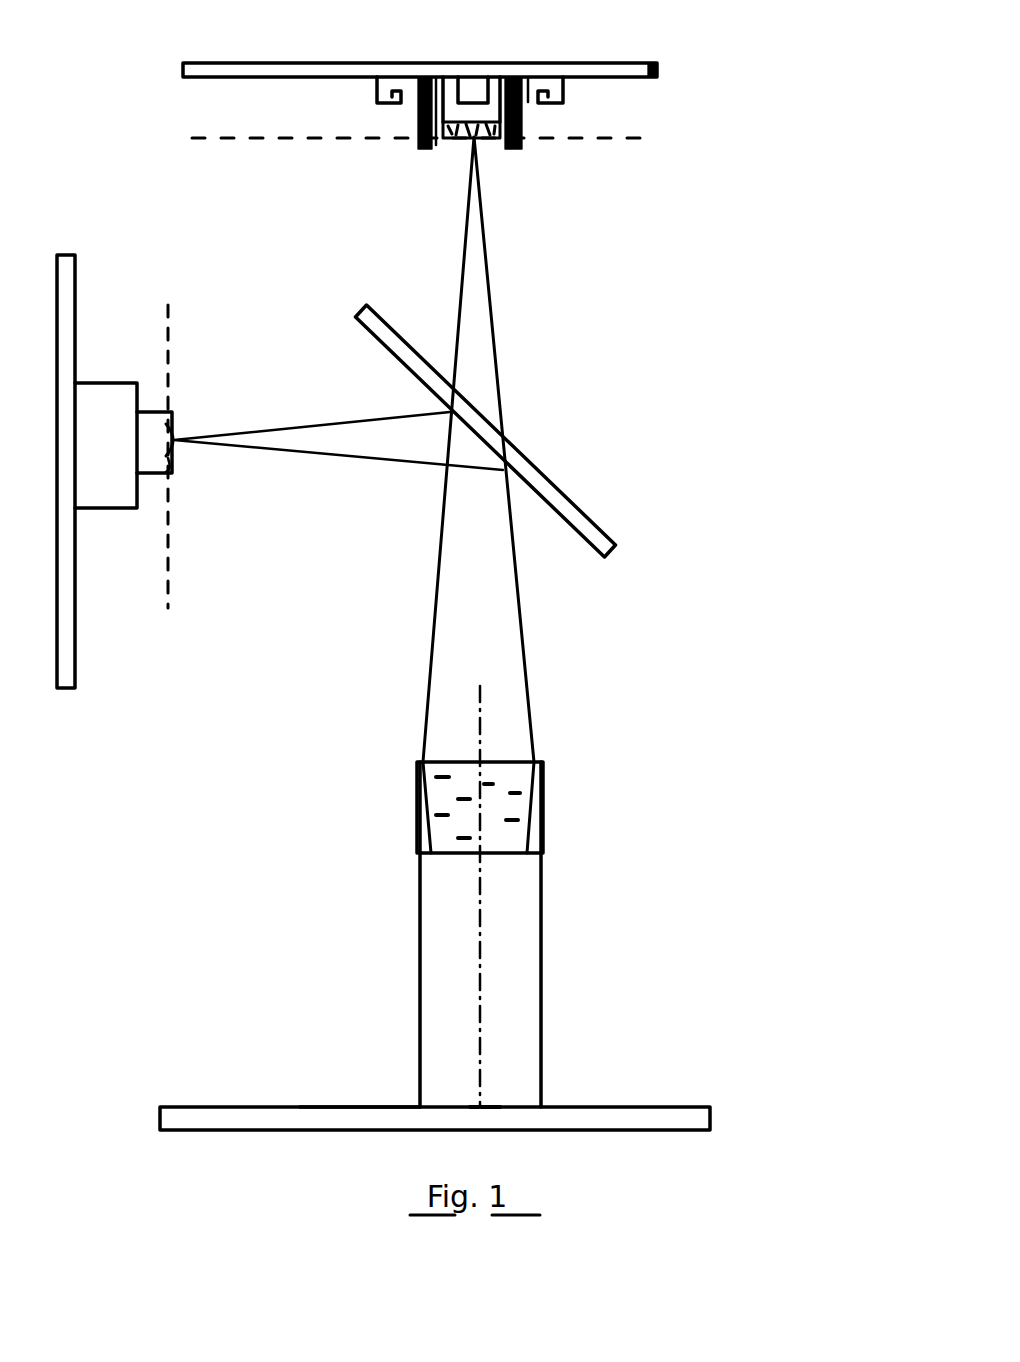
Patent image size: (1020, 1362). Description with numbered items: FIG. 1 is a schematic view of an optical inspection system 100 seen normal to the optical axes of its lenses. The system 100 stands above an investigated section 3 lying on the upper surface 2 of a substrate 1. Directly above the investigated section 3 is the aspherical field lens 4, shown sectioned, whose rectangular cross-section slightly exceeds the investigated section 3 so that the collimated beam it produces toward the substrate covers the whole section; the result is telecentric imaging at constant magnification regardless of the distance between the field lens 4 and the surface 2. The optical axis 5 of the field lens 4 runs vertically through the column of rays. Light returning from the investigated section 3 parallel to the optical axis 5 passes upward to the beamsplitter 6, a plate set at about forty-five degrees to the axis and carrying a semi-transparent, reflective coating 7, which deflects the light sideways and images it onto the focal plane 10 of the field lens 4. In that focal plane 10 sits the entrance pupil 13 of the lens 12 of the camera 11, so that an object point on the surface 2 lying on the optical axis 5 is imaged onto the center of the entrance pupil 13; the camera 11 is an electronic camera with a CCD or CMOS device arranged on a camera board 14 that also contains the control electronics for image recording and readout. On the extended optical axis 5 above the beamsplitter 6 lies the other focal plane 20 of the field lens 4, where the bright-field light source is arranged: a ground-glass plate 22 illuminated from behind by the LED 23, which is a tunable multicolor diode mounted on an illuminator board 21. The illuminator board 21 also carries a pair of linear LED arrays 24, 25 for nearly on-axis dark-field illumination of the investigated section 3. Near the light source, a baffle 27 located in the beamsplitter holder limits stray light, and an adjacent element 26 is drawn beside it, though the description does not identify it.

The optical inspection system 100 is at (777, 250).
The substrate 1 is at (647, 1112).
The upper surface 2 is at (290, 1094).
The investigated section 3 is at (497, 1104).
The aspherical field lens 4 is at (528, 832).
The optical axis 5 is at (483, 966).
The beamsplitter 6 is at (551, 491).
The semi-transparent reflective coating 7 is at (581, 548).
The focal plane 10 is at (171, 310).
The camera 11 is at (114, 492).
The camera lens 12 is at (170, 483).
The entrance pupil 13 is at (173, 440).
The camera board 14 is at (72, 673).
The focal plane 20 is at (256, 139).
The illuminator board 21 is at (657, 70).
The ground-glass plate 22 is at (453, 141).
The LED 23 is at (475, 96).
The linear LED array 24 is at (560, 95).
The linear LED array 25 is at (383, 93).
The right support post 26 is at (523, 130).
The baffle 27 is at (418, 130).